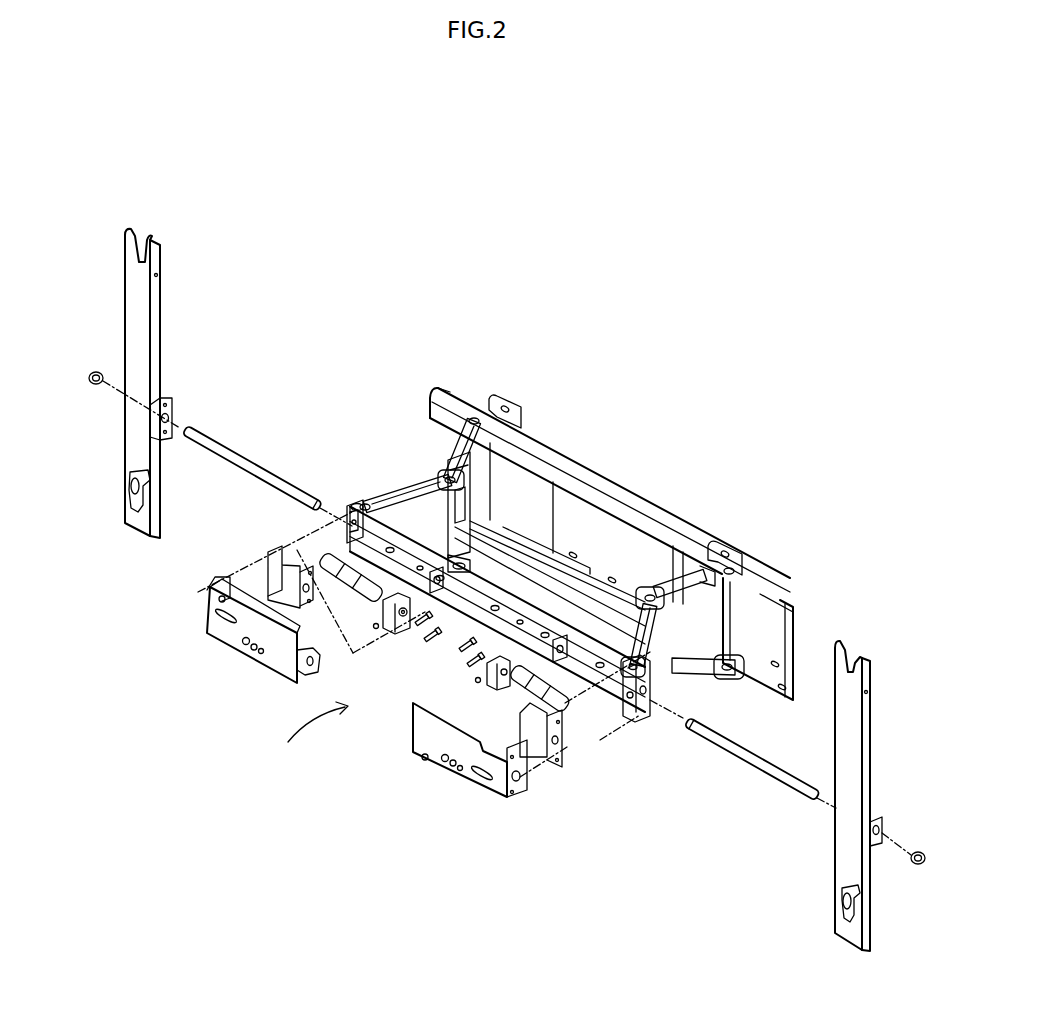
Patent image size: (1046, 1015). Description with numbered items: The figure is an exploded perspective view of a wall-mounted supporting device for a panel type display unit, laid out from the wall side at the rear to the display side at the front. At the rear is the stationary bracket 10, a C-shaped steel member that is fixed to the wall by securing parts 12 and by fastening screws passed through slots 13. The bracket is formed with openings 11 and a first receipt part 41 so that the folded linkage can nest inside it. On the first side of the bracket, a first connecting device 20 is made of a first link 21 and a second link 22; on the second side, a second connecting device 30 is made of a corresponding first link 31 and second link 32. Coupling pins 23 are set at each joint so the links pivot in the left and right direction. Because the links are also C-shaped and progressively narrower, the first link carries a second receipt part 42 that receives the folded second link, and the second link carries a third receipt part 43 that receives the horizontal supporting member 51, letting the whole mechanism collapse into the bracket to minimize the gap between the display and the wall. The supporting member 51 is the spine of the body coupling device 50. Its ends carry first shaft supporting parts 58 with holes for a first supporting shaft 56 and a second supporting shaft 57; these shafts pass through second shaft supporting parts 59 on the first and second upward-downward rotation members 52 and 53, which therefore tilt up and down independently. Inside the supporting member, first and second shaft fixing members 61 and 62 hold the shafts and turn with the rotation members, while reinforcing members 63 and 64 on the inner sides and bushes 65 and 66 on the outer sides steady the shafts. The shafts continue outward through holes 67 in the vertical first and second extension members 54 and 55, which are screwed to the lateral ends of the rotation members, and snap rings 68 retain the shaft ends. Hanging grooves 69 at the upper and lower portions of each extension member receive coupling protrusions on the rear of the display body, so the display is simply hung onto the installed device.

The stationary bracket 10 is at (635, 503).
The openings 11 is at (550, 478).
The securing parts 12 is at (518, 408).
The slots 13 is at (778, 666).
The first connecting device 20 is at (452, 450).
The first link 21 is at (454, 400).
The second link 22 is at (362, 503).
The coupling pins 23 is at (474, 418).
The second connecting device 30 is at (690, 575).
The first link 31 is at (705, 572).
The second link 32 is at (656, 637).
The first receipt part 41 is at (592, 533).
The second receipt part 42 is at (472, 520).
The third receipt part 43 is at (412, 482).
The body coupling device 50 is at (312, 731).
The supporting member 51 is at (500, 598).
The first upward-downward rotation member 52 is at (275, 666).
The second upward-downward rotation member 53 is at (428, 748).
The first extension member 54 is at (134, 302).
The second extension member 55 is at (850, 755).
The first supporting shaft 56 is at (243, 458).
The second supporting shaft 57 is at (760, 757).
The first shaft supporting parts 58 is at (352, 512).
The second shaft supporting parts 59 is at (220, 585).
The first shaft fixing member 61 is at (387, 625).
The second shaft fixing member 62 is at (476, 682).
The reinforcing member 63 is at (270, 575).
The reinforcing member 64 is at (535, 748).
The bush 65 is at (360, 590).
The bush 66 is at (527, 692).
The holes 67 is at (168, 415).
The snap rings 68 is at (94, 384).
The hanging grooves 69 is at (135, 238).